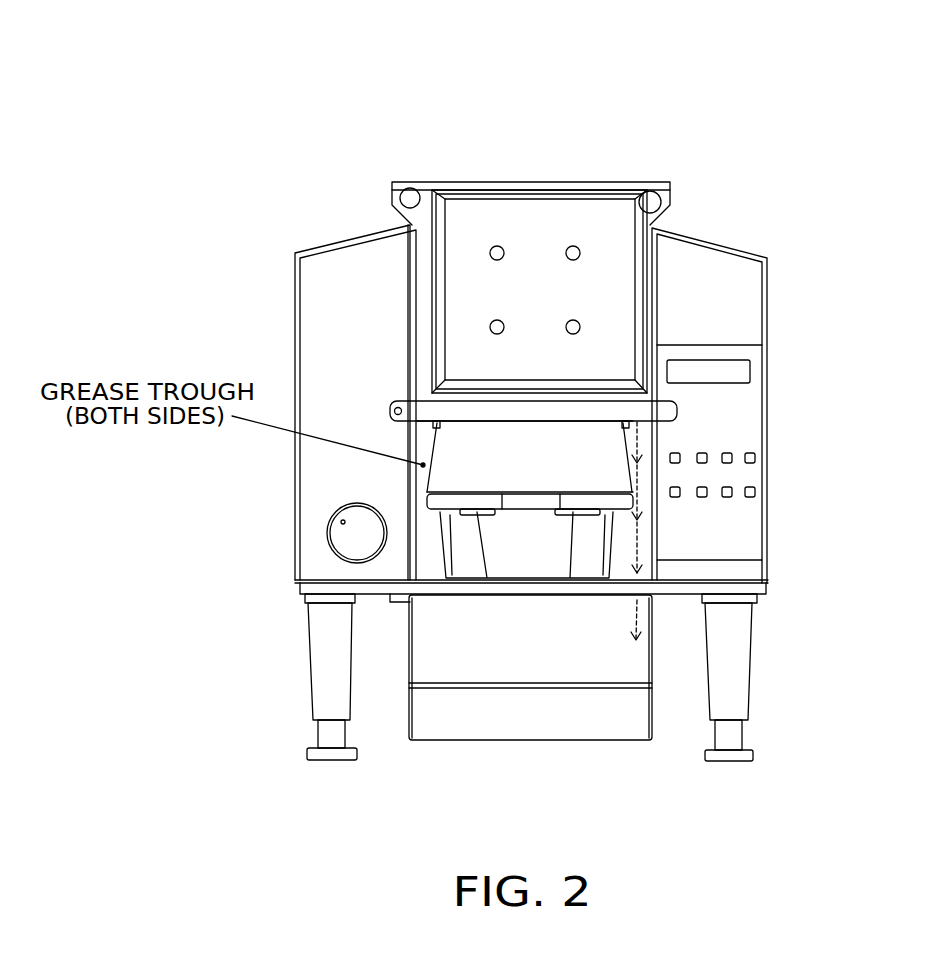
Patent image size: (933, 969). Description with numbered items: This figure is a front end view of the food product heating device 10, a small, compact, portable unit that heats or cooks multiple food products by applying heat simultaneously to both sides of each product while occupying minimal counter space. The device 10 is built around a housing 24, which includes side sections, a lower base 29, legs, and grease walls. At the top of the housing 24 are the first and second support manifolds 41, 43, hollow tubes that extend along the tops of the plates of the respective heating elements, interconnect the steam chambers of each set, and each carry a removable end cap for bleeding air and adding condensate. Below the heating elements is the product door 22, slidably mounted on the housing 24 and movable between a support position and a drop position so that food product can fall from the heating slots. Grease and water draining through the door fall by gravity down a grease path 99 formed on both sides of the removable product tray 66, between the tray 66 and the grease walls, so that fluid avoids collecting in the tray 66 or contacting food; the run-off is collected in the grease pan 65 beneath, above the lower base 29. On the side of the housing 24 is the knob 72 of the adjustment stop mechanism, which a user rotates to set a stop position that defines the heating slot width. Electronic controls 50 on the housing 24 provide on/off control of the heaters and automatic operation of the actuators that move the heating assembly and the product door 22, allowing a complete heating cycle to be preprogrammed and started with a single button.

The food product heating device 10 is at (789, 171).
The product door 22 is at (423, 410).
The housing 24 is at (770, 565).
The lower base 29 is at (765, 592).
The first support manifold 41 is at (405, 182).
The second support manifold 43 is at (651, 192).
The electronic controls 50 is at (757, 452).
The grease pan 65 is at (530, 650).
The removable product tray 66 is at (452, 500).
The knob 72 is at (330, 547).
The grease path 99 is at (643, 617).